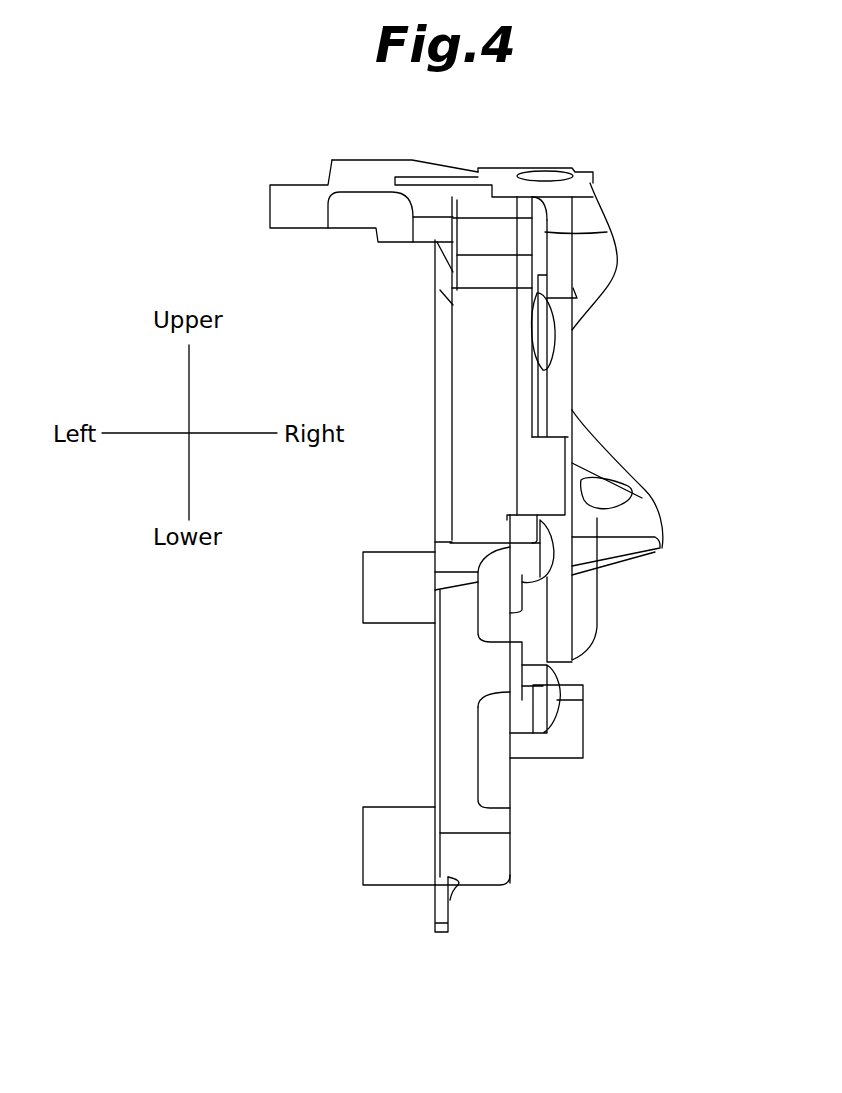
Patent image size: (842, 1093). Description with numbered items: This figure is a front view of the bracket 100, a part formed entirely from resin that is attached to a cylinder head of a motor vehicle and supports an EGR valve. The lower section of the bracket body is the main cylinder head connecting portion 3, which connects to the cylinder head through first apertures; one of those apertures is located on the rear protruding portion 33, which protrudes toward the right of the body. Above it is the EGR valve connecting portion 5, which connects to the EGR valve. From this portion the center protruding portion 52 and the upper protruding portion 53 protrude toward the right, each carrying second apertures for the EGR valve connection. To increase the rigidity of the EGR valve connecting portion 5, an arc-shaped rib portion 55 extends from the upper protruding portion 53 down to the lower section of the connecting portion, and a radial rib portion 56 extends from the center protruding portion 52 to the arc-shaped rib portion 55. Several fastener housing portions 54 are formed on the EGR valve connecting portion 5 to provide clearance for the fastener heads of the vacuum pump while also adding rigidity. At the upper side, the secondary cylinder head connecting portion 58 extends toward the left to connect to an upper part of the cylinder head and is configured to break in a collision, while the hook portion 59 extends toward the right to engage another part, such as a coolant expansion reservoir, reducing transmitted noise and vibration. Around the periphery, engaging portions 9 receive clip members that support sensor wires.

The bracket 100 is at (630, 146).
The secondary cylinder head connecting portion 58 is at (350, 173).
The hook portion 59 is at (550, 181).
The engaging portions 9 is at (482, 237).
The upper protruding portion 53 is at (583, 267).
The EGR valve connecting portion 5 is at (482, 375).
The fastener housing portions 54 is at (545, 327).
The arc-shaped rib portion 55 is at (553, 383).
The center protruding portion 52 is at (632, 508).
The radial rib portion 56 is at (662, 538).
The main cylinder head connecting portion 3 is at (472, 675).
The rear protruding portion 33 is at (558, 743).